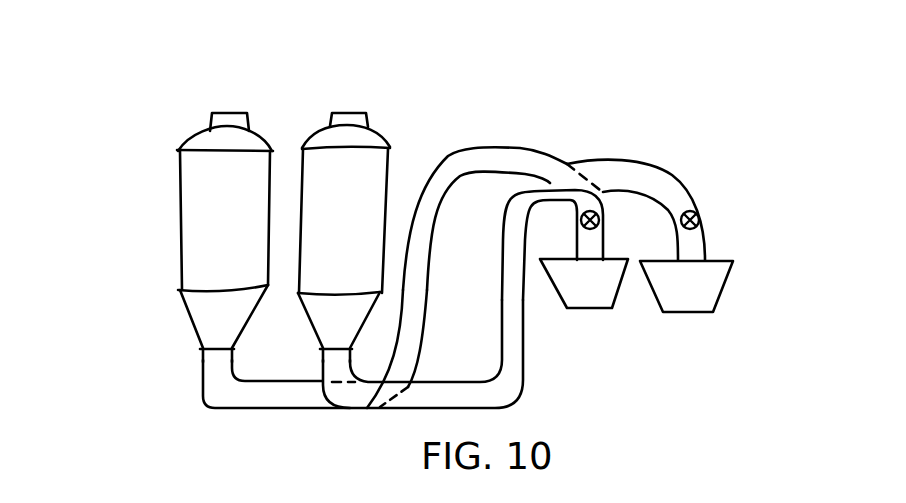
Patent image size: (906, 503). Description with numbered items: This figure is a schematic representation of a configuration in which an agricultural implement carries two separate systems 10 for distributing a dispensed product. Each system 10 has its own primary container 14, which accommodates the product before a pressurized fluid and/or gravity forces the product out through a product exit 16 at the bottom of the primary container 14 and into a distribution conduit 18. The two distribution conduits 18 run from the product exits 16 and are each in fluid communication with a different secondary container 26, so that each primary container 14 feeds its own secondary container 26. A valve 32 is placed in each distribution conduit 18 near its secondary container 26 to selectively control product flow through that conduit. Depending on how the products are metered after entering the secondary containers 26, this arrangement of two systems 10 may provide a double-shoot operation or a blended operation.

The system 10 is at (420, 138).
The primary container 14 is at (176, 212).
The product exit 16 is at (203, 345).
The distribution conduit 18 is at (222, 408).
The secondary container 26 is at (595, 312).
The valve 32 is at (601, 208).